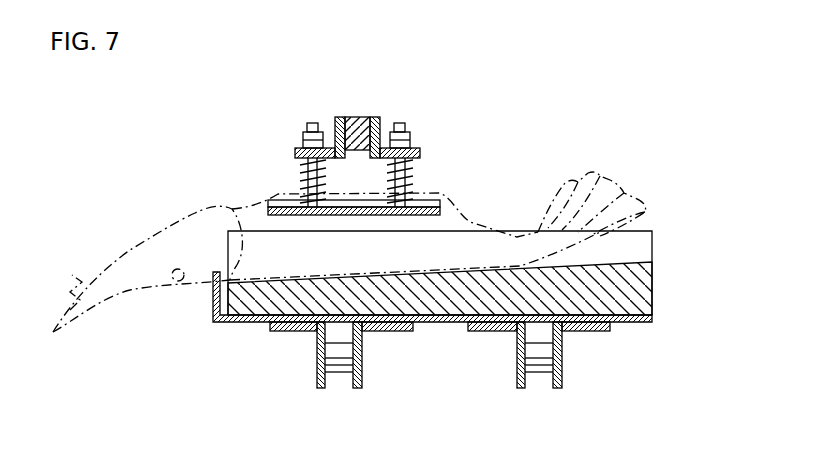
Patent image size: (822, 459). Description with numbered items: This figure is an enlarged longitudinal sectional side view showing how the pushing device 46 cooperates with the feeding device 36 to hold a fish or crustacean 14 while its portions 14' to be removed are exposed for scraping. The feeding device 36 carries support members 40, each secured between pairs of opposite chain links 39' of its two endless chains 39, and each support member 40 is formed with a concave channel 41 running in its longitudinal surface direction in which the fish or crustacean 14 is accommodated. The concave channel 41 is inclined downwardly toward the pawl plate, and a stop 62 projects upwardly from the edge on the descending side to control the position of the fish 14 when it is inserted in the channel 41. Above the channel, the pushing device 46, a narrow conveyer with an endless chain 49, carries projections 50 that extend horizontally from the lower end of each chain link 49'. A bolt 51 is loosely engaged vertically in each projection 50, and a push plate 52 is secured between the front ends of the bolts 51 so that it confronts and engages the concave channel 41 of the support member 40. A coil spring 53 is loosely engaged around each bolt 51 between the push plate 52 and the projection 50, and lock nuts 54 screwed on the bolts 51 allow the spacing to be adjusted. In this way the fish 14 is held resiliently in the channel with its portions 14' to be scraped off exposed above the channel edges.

The fish or crustacea 14 is at (438, 226).
The portions to be removed 14' is at (147, 264).
The feeding device 36 is at (445, 314).
The endless chains 39 is at (438, 375).
The chain links 39' is at (439, 386).
The support member 40 is at (640, 293).
The concave channel 41 is at (598, 263).
The pushing device 46 is at (331, 165).
The endless chain 49 is at (310, 105).
The chain link 49' is at (377, 110).
The projection 50 is at (298, 150).
The bolt 51 is at (300, 185).
The push plate 52 is at (334, 216).
The coil spring 53 is at (300, 170).
The lock nuts 54 is at (303, 134).
The stop 62 is at (214, 300).